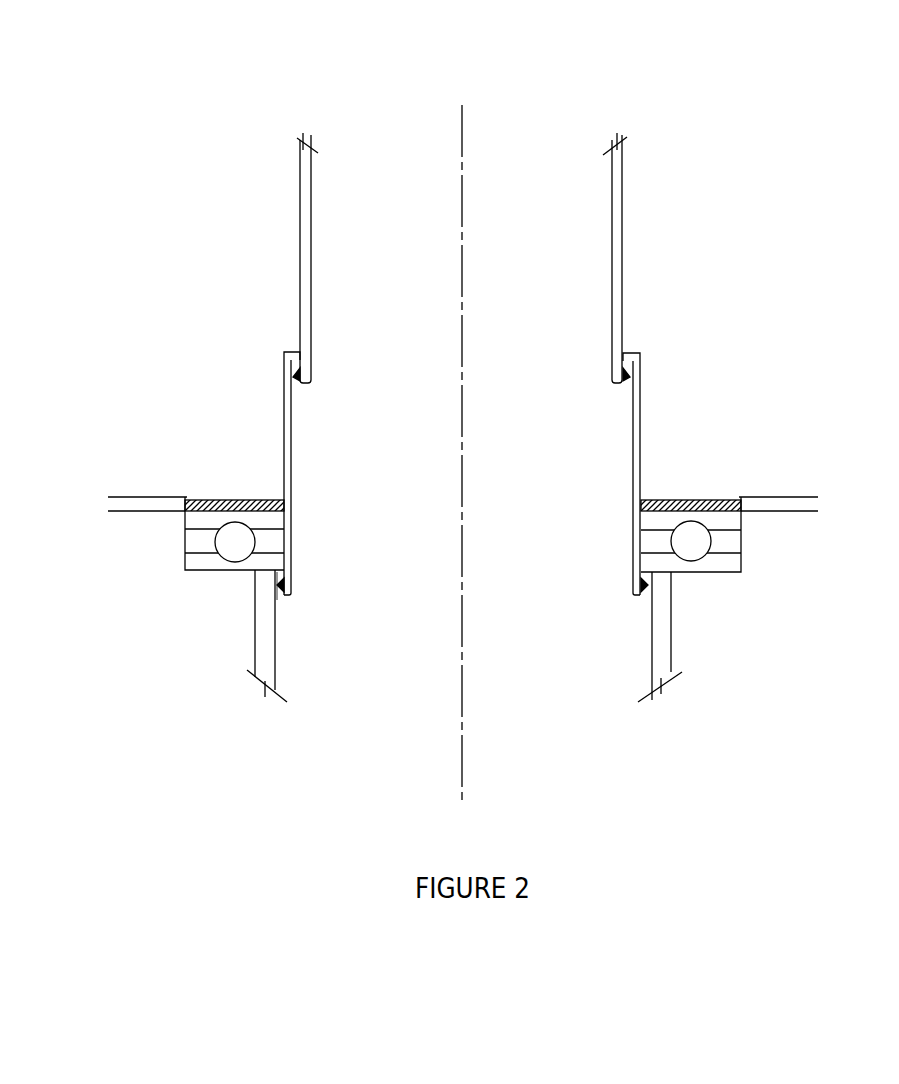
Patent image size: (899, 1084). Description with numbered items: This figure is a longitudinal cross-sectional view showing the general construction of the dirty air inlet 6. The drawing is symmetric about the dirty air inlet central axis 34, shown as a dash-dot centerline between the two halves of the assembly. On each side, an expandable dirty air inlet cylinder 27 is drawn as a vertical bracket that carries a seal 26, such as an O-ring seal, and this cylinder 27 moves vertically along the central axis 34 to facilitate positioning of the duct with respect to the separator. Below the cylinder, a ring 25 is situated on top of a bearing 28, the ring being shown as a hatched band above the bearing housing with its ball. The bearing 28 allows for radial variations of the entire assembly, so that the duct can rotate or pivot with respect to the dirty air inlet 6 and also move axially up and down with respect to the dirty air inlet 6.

The dirty air inlet 6 is at (180, 672).
The ring 25 is at (175, 410).
The seal 26 is at (309, 627).
The expandable dirty air inlet cylinder 27 is at (717, 426).
The bearing 28 is at (753, 626).
The dirty air inlet central axis 34 is at (567, 426).